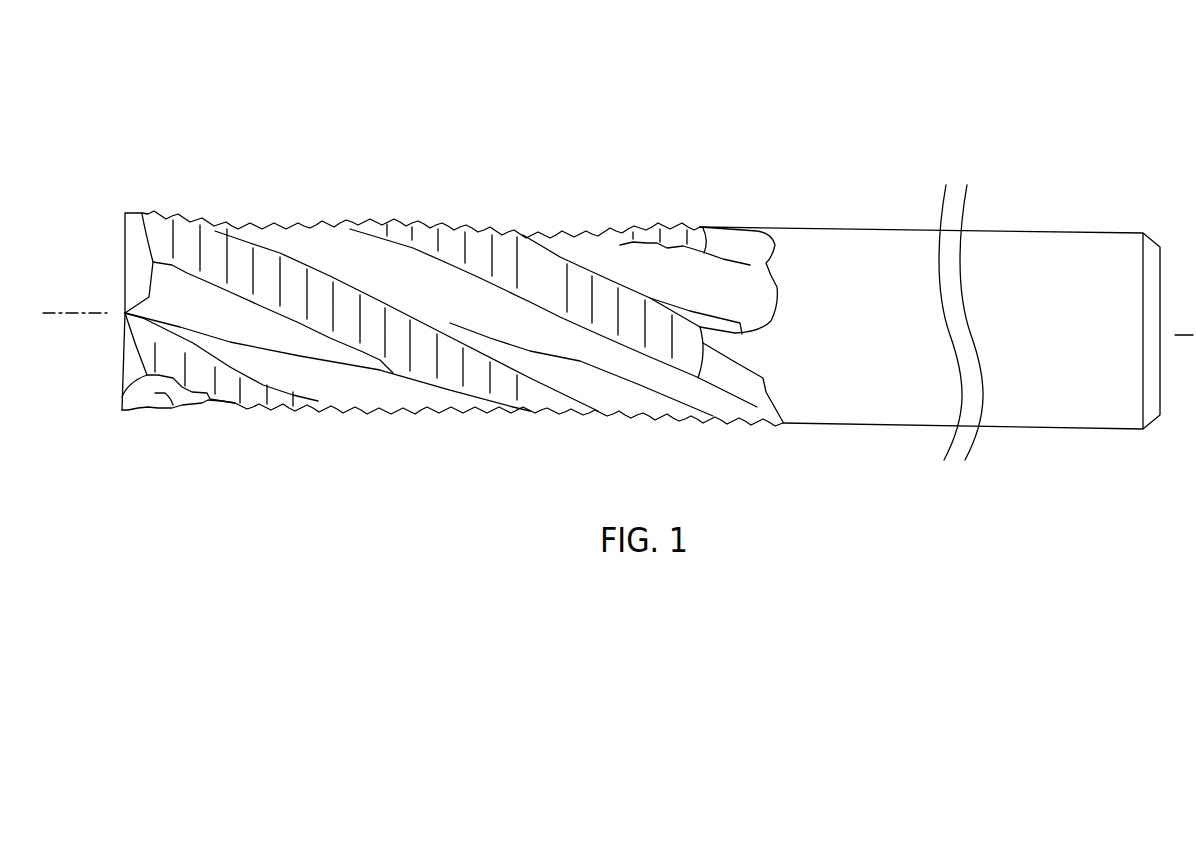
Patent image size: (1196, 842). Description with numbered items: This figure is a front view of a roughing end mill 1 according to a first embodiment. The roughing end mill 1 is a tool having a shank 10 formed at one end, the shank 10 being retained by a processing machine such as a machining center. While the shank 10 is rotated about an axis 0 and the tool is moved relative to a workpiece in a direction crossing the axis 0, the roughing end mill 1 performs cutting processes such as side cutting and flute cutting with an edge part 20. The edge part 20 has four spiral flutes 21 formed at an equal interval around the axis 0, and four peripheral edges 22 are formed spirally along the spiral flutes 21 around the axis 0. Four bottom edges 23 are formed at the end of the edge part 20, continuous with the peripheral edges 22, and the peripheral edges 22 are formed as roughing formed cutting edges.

The roughing end mill 1 is at (1000, 86).
The shank 10 is at (1053, 240).
The edge part 20 is at (622, 182).
The spiral flute 21 is at (173, 407).
The peripheral edge 22 is at (337, 263).
The bottom edge 23 is at (123, 323).
The axis 0 is at (61, 308).